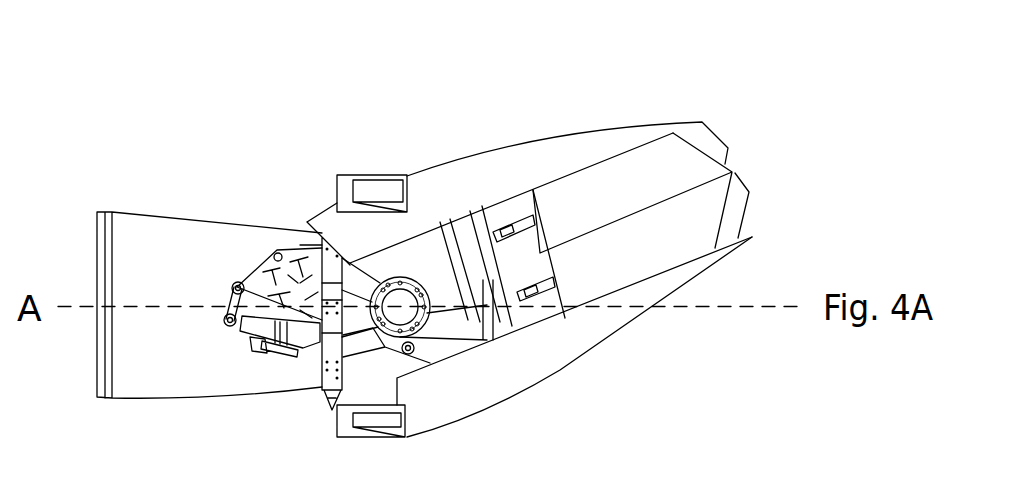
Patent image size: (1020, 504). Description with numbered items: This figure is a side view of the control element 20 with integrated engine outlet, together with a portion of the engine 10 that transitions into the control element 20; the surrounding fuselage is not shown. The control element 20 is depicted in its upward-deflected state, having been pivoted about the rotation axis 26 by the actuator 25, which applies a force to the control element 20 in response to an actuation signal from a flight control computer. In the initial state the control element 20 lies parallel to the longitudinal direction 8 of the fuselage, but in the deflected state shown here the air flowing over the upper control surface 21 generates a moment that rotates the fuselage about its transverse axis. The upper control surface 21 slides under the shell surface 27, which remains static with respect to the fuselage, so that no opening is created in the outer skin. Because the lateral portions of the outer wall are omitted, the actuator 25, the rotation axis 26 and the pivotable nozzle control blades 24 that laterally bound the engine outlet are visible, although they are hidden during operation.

The longitudinal direction 8 is at (703, 308).
The engine 10 is at (175, 235).
The control element 20 is at (443, 117).
The upper control surface 21 is at (517, 138).
The nozzle control blades 24 is at (618, 188).
The actuator 25 is at (277, 358).
The rotation axis 26 is at (430, 365).
The shell surface 27 is at (346, 176).